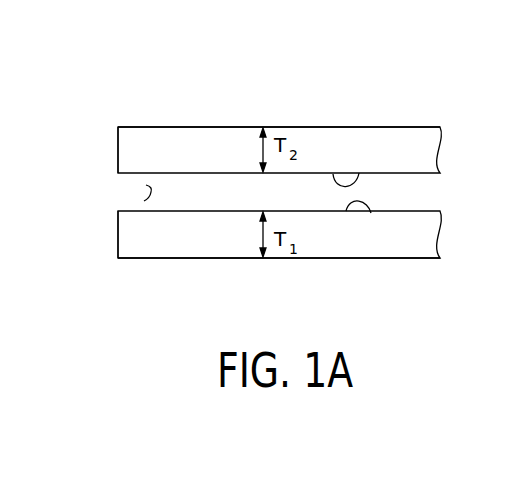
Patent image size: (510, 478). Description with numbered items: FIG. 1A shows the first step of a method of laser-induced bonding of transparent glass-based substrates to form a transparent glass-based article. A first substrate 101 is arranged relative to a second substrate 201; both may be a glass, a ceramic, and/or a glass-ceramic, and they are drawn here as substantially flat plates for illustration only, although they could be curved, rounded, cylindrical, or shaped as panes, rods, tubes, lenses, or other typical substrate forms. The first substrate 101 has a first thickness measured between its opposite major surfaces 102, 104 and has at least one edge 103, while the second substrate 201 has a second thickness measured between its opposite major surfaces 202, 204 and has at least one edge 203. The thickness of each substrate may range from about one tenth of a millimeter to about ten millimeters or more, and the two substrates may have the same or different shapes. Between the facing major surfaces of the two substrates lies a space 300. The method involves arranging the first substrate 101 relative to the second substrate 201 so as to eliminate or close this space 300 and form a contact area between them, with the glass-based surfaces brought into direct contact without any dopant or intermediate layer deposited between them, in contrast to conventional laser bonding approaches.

The first substrate 101 is at (130, 243).
The major surface 102 is at (371, 213).
The edge 103 is at (118, 222).
The major surface 104 is at (212, 260).
The second substrate 201 is at (162, 147).
The major surface 202 is at (359, 173).
The edge 203 is at (118, 150).
The major surface 204 is at (227, 126).
The space 300 is at (143, 195).